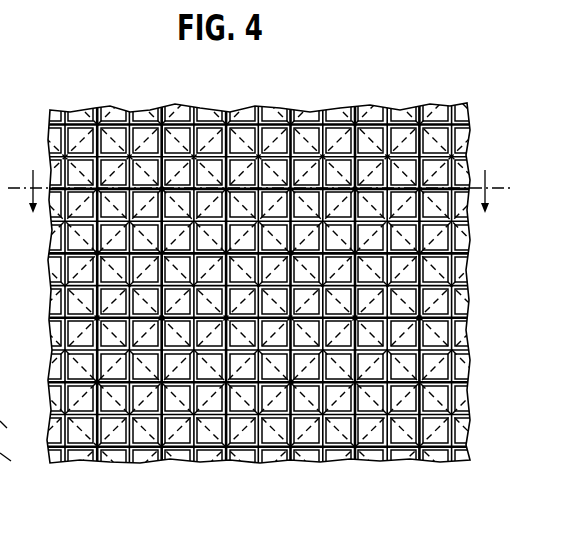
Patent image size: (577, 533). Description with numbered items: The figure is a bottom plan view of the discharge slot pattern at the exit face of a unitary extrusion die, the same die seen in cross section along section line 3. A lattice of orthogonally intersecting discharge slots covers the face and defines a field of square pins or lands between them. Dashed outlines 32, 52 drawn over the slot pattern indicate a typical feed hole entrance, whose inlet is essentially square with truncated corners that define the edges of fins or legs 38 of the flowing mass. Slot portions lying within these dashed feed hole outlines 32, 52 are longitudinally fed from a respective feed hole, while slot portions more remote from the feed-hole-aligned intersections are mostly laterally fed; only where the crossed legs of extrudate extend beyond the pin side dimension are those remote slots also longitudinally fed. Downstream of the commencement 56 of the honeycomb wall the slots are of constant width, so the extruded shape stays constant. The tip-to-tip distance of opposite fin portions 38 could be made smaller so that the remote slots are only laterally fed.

The feed hole entrance 32 is at (113, 103).
The feed hole entrance outline 52 is at (288, 279).
The fins 38 is at (14, 431).
The commencement of honeycomb wall 56 is at (17, 464).
The section line 3- 3 is at (260, 206).